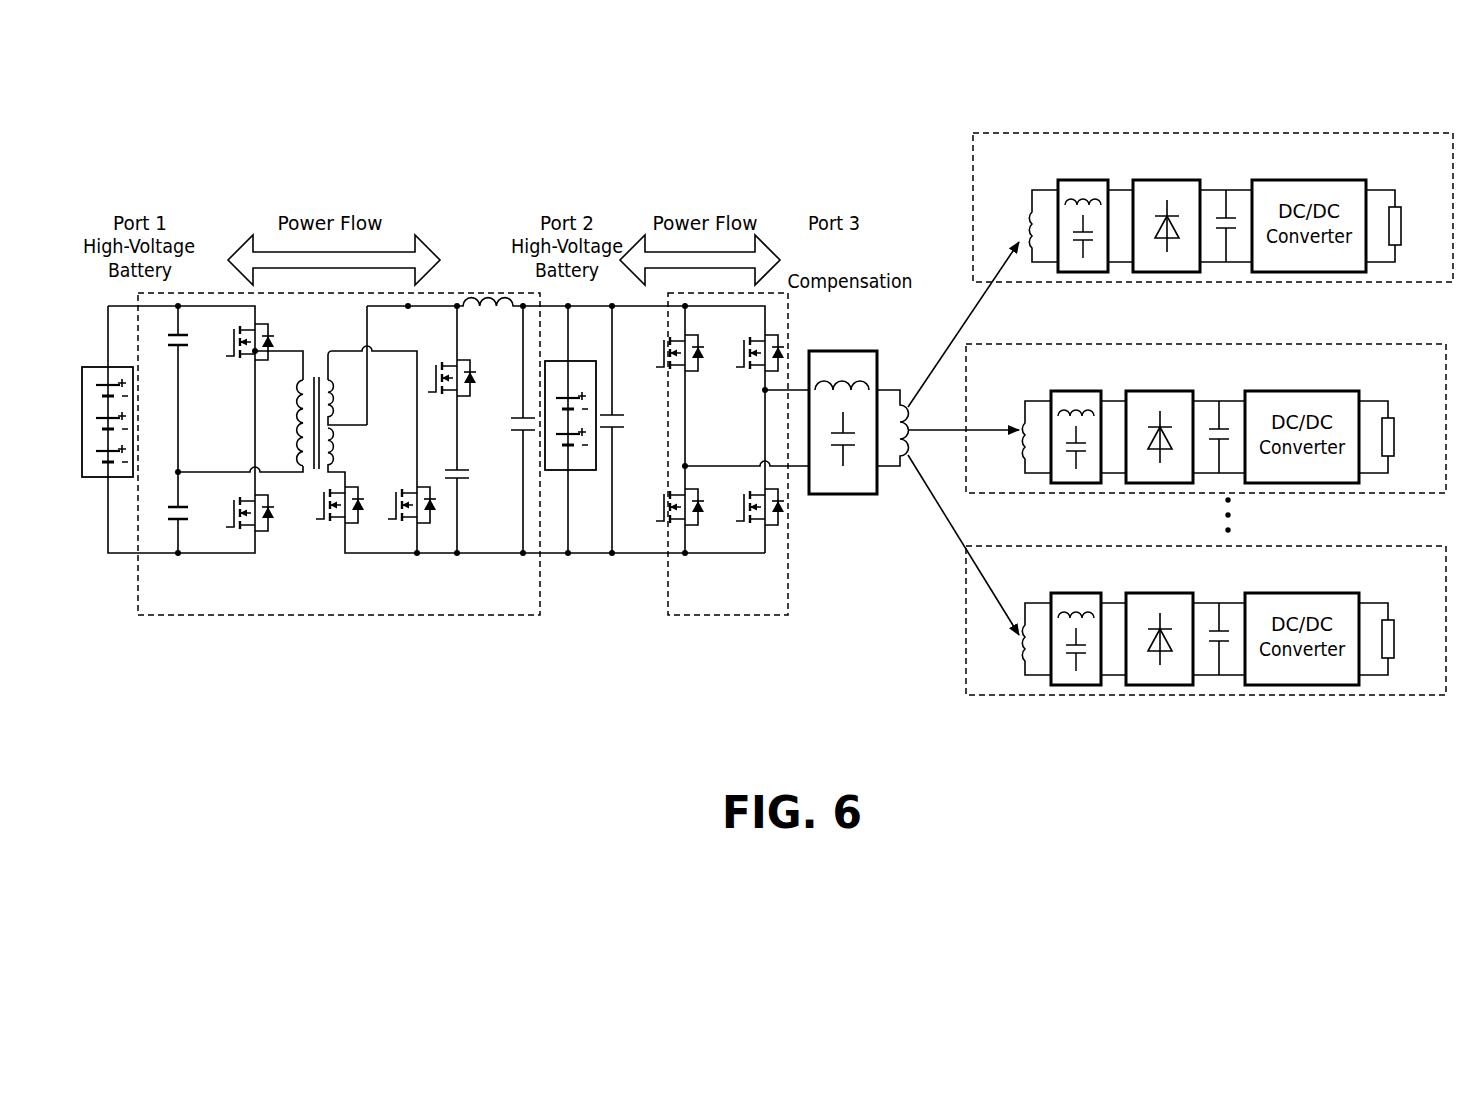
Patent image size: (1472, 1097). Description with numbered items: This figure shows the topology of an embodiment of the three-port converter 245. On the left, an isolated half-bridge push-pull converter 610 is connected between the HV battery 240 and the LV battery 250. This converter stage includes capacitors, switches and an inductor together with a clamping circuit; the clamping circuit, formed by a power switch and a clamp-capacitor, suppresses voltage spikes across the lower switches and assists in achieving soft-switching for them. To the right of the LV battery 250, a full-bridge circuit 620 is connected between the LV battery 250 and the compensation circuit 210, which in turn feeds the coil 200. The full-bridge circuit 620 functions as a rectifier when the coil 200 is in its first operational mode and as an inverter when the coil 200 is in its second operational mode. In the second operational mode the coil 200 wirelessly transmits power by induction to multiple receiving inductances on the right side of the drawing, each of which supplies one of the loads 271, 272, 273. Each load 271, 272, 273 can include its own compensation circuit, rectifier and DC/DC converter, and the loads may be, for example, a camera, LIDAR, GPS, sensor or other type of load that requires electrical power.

The coil 200 is at (887, 467).
The compensation circuit 210 is at (847, 495).
The HV battery 240 is at (86, 477).
The three-port converter 245 is at (488, 735).
The LV battery 250 is at (578, 472).
The load 271 is at (1340, 133).
The load 272 is at (1320, 343).
The load 273 is at (1322, 695).
The isolated half-bridge push-pull converter 610 is at (343, 617).
The full-bridge circuit 620 is at (772, 618).